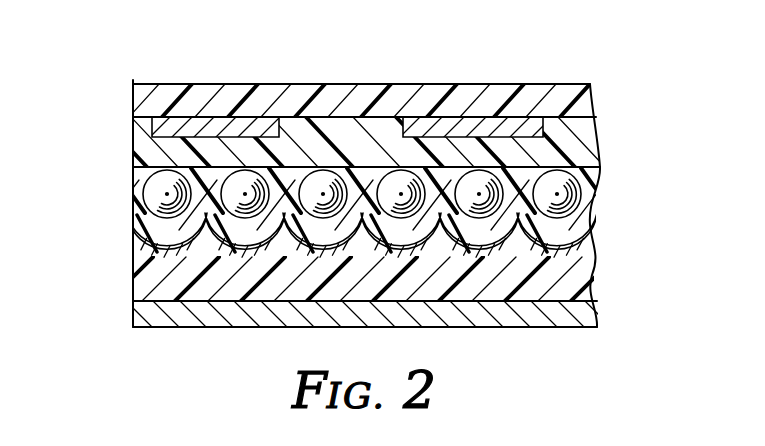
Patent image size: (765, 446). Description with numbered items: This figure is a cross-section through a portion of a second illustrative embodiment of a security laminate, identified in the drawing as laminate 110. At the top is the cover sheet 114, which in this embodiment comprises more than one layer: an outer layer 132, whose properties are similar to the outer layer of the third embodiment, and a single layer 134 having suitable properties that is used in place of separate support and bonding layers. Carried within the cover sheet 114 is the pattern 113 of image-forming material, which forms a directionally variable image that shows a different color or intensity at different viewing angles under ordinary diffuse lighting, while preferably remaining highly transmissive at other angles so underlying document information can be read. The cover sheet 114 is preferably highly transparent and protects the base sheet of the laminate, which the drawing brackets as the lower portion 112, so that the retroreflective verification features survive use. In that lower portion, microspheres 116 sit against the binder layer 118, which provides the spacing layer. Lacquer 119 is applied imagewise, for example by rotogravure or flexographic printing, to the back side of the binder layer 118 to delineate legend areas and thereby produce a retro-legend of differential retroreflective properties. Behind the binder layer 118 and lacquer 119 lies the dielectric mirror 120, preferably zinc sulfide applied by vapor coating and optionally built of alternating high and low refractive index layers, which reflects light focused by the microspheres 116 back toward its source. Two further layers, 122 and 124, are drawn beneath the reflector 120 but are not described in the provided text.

The retroreflective sheeting 110 is at (155, 76).
The base sheet / retroreflective layer assembly 112 is at (627, 170).
The pattern 113 is at (207, 124).
The cover sheet 114 is at (627, 90).
The microspheres 116 is at (545, 175).
The binder layer 118 is at (138, 207).
The lacquer 119 is at (247, 248).
The dielectric mirror 120 is at (135, 240).
The adhesive / binder layer 122 is at (135, 288).
The backing layer 124 is at (155, 323).
The outer layer 132 is at (326, 97).
The single layer 134 is at (138, 147).